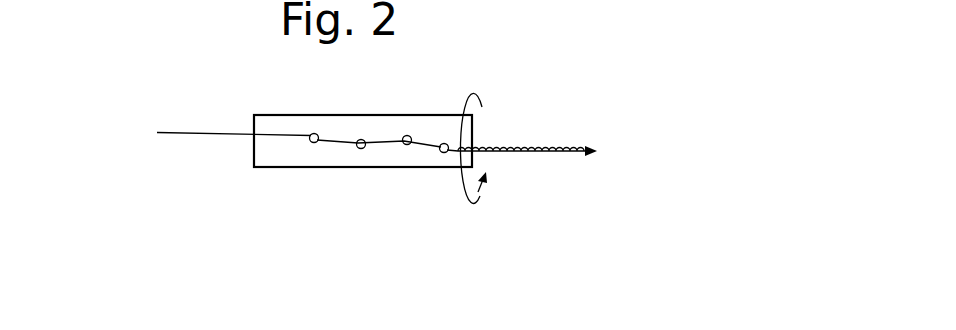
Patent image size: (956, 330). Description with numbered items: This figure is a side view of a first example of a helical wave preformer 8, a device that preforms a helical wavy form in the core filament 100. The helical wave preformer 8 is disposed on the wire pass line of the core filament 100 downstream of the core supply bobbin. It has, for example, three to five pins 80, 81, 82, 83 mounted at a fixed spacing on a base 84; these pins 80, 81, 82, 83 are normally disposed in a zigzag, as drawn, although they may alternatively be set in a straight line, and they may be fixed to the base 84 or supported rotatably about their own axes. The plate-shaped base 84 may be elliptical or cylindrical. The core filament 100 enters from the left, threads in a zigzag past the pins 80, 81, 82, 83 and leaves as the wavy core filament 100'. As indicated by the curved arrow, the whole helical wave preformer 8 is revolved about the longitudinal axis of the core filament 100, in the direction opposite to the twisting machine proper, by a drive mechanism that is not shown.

The helical wave preformer 8 is at (251, 175).
The core filament 100 is at (234, 94).
The core filament with helical wavy form 100' is at (530, 99).
The pin 80 is at (316, 134).
The pin 81 is at (360, 149).
The pin 82 is at (407, 145).
The pin 83 is at (444, 153).
The base 84 is at (303, 167).